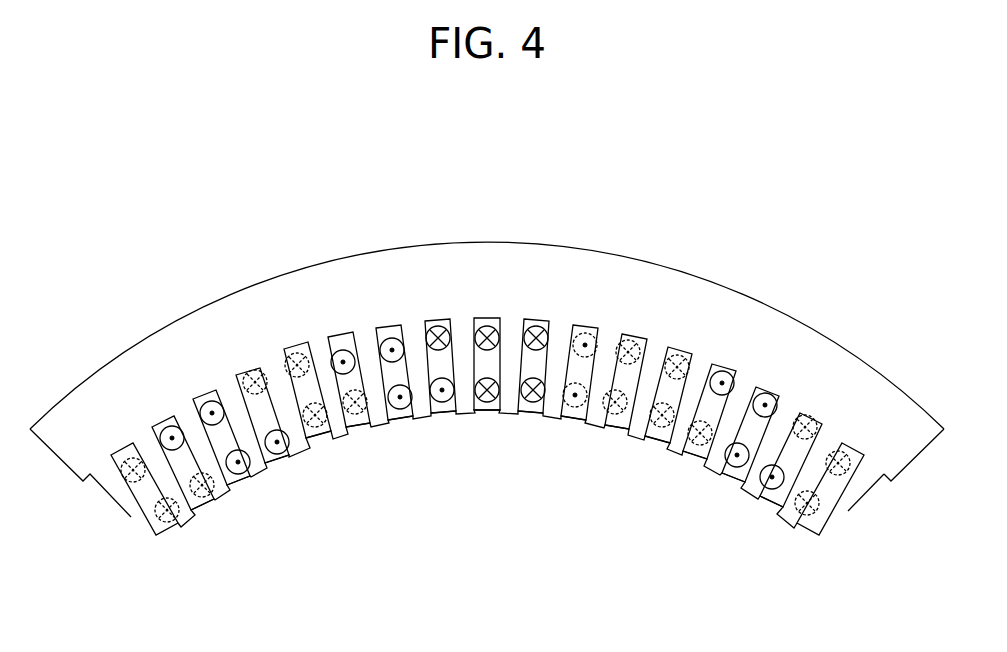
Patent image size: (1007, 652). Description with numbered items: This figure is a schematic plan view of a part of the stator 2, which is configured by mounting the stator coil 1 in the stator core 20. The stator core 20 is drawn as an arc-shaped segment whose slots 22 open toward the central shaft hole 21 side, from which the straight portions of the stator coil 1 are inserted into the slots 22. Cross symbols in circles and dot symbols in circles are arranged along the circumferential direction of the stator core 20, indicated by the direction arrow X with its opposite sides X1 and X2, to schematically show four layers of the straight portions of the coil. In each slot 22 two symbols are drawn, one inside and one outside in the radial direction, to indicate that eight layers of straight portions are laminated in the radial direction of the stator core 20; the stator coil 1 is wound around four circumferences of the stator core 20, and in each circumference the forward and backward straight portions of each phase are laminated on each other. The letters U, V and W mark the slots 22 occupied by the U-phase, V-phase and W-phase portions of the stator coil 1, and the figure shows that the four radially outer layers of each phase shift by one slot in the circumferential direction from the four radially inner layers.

The stator coil 1 is at (840, 502).
The stator 2 is at (626, 243).
The stator core 20 is at (733, 288).
The central shaft hole 21 is at (473, 582).
The slot 22 is at (797, 520).
The circumferential direction X is at (535, 118).
The first circumferential side X1 is at (414, 121).
The second circumferential side X2 is at (562, 121).
The U-phase coil U is at (162, 428).
The V-phase coil V is at (294, 357).
The W-phase coil W is at (341, 350).